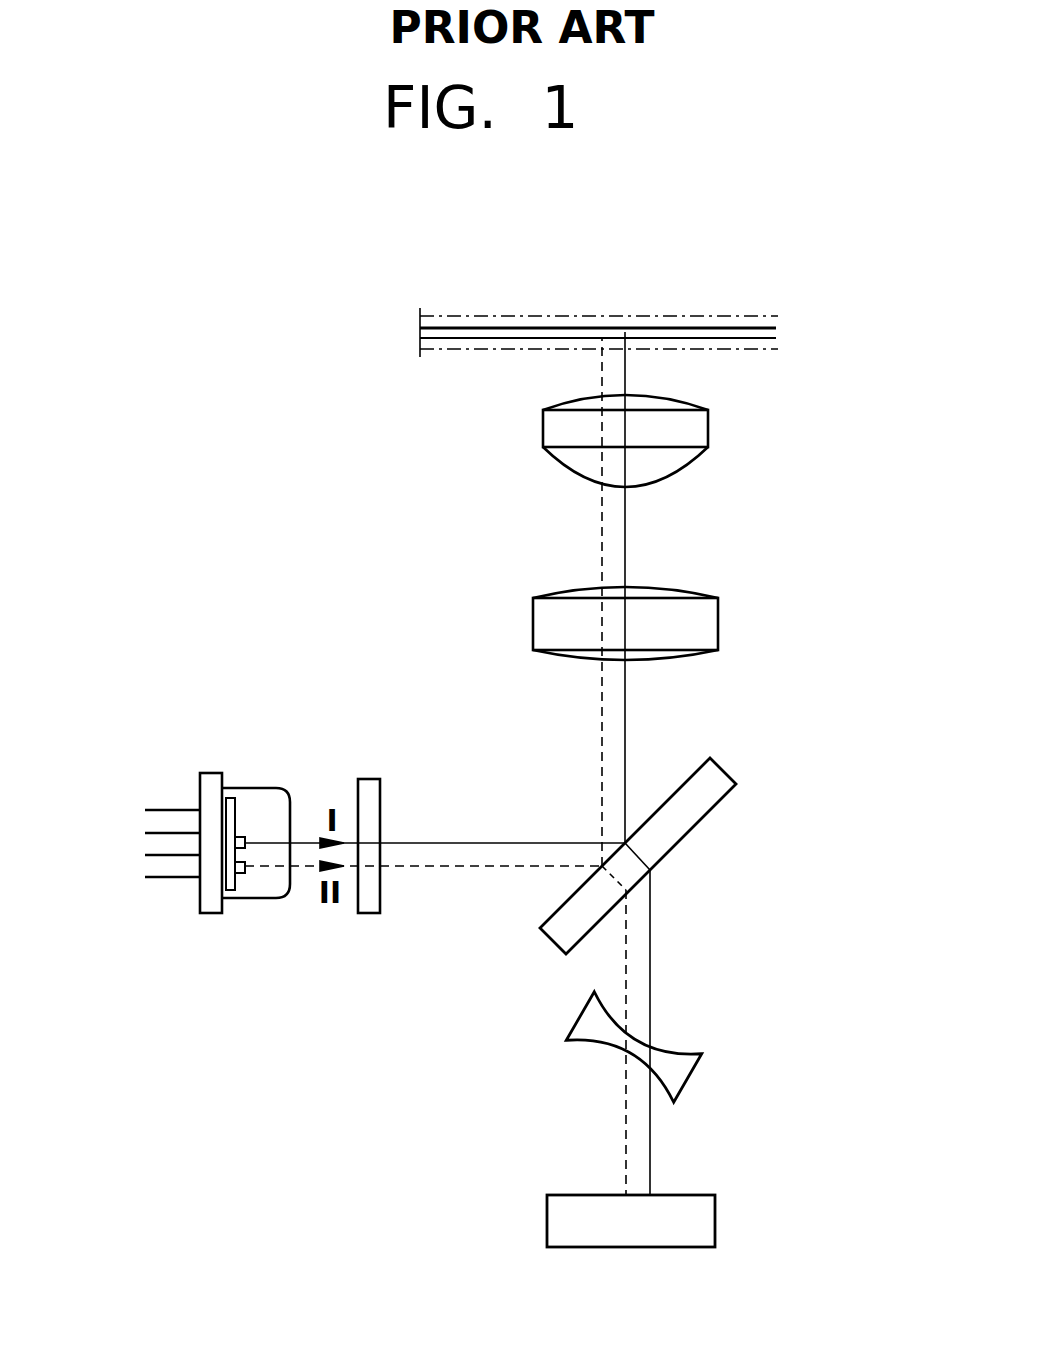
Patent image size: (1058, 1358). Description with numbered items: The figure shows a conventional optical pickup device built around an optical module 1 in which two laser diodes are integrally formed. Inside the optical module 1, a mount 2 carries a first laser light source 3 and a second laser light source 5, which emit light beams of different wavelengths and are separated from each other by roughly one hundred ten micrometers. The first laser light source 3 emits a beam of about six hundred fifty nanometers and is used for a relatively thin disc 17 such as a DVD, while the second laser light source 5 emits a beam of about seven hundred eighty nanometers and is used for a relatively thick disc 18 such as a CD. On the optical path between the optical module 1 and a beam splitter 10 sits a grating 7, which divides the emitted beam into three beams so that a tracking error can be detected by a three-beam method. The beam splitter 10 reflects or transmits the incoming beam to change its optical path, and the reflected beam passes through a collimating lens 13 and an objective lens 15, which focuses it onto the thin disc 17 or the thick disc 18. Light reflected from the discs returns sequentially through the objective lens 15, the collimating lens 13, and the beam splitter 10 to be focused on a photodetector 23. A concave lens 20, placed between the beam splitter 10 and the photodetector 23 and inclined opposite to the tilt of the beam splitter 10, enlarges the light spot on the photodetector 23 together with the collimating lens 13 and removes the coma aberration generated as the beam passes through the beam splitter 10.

The optical module 1 is at (191, 847).
The mount 2 is at (228, 887).
The first laser light source 3 is at (238, 838).
The second laser light source 5 is at (240, 872).
The grating 7 is at (370, 786).
The beam splitter 10 is at (687, 823).
The collimating lens 13 is at (713, 625).
The objective lens 15 is at (708, 428).
The relatively thin disc 17 is at (772, 333).
The relatively thick disc 18 is at (633, 317).
The concave lens 20 is at (670, 1057).
The photodetector 23 is at (665, 1238).